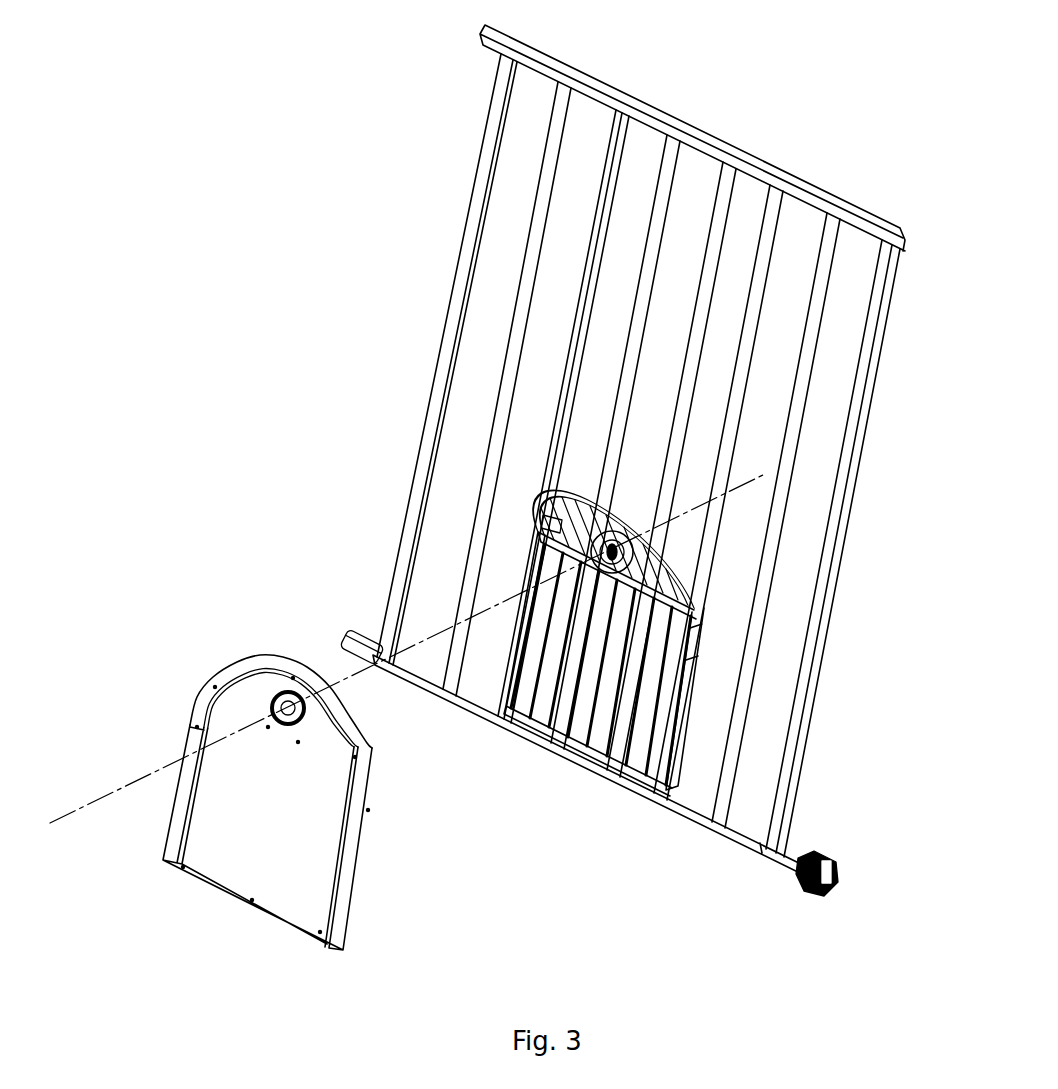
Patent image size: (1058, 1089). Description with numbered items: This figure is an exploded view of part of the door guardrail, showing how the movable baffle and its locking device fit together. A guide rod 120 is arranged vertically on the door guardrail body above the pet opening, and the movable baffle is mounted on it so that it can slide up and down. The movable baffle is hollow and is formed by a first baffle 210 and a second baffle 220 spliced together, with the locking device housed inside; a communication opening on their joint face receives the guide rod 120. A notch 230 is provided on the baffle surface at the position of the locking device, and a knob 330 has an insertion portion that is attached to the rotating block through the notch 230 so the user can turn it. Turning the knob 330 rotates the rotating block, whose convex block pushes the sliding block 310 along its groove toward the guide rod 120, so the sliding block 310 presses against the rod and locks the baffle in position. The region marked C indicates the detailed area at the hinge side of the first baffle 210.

The guide rod 120 is at (607, 465).
The first baffle 210 is at (270, 840).
The second baffle 220 is at (700, 677).
The notch 230 is at (273, 708).
The sliding block 310 is at (538, 540).
The knob 330 is at (687, 553).
The hinge plate C is at (548, 520).